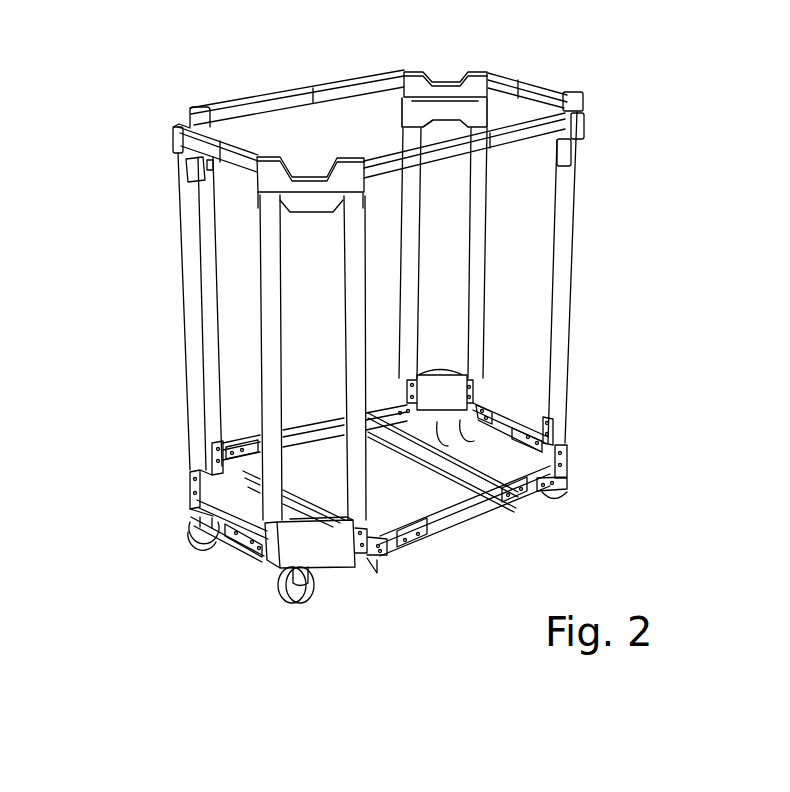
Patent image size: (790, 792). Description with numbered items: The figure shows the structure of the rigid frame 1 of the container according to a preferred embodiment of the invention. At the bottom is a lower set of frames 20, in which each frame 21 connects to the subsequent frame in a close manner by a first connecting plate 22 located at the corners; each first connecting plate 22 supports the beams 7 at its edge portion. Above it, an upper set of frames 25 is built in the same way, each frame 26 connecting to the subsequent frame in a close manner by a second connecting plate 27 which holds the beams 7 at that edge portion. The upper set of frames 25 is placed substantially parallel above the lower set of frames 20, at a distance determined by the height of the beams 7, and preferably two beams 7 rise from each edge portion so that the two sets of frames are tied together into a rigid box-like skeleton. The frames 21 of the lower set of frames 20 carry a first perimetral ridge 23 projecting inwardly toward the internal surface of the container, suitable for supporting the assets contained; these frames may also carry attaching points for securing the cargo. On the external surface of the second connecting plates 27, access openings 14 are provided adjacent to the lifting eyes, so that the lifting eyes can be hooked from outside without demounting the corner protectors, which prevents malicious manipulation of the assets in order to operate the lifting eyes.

The rigid frame 1 is at (143, 100).
The beams 7 is at (350, 345).
The access openings 14 is at (438, 73).
The lower set of frames 20 is at (590, 504).
The frame 21 is at (333, 433).
The first connecting plate 22 is at (433, 385).
The first perimetral ridge 23 is at (552, 500).
The upper set of frames 25 is at (608, 100).
The frame 26 is at (250, 105).
The second connecting plate 27 is at (404, 120).